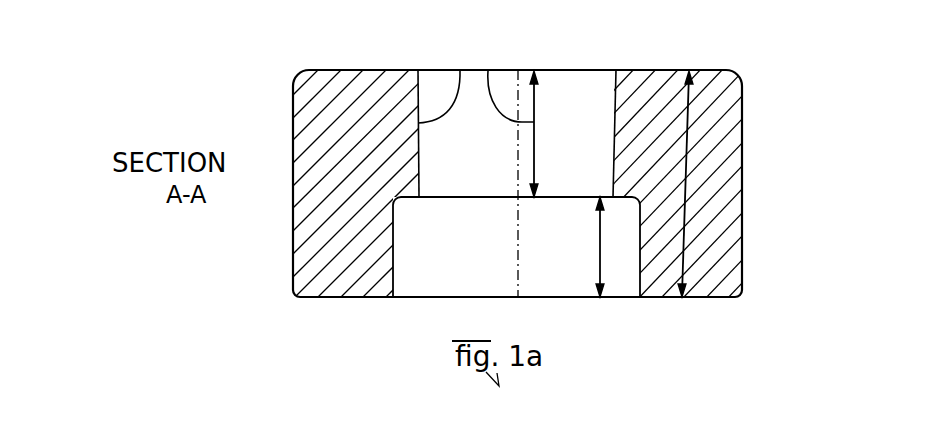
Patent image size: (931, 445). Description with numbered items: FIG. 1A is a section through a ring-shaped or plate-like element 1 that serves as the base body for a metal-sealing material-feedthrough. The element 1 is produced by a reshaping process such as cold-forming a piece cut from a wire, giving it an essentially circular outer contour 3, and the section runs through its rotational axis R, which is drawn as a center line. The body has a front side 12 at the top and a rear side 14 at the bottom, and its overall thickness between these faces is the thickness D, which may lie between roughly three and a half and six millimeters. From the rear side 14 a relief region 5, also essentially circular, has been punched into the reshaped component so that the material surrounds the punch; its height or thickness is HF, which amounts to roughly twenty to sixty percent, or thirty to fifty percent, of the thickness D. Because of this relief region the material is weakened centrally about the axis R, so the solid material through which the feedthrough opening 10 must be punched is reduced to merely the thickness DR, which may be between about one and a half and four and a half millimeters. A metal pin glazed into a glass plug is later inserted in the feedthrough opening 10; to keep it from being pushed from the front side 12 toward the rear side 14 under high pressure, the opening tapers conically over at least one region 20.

The ring-shaped or plate-like element 1 is at (668, 50).
The circular outer contour 3 is at (742, 212).
The relief region 5 is at (413, 297).
The feedthrough opening 10 is at (557, 105).
The front side 12 is at (332, 70).
The rear side 14 is at (315, 297).
The region 20 is at (460, 70).
The thickness of the region to be punched out DR is at (492, 70).
The rotational axis R is at (518, 297).
The height or thickness of the relief region HF is at (617, 297).
The thickness of the ring-shaped element D is at (688, 169).